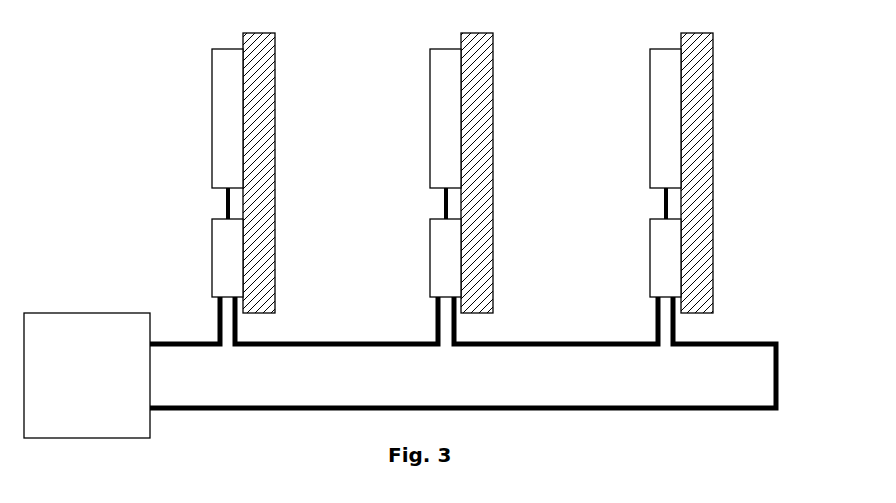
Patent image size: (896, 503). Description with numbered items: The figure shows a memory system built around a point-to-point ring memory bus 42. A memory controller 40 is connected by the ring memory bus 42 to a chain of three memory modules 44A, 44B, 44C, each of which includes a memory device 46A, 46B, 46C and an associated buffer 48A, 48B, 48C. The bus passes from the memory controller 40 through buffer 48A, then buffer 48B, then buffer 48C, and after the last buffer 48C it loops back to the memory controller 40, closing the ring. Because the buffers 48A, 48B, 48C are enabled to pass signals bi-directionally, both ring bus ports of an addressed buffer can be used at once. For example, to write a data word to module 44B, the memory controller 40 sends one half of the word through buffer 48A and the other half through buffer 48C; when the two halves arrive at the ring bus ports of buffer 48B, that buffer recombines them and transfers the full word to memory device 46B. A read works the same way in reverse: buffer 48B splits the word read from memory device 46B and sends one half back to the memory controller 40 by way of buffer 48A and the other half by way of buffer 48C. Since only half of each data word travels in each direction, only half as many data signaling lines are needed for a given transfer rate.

The memory controller 40 is at (87, 375).
The ring memory bus 42 is at (463, 352).
The memory module 44A is at (275, 80).
The memory module 44B is at (493, 80).
The memory module 44C is at (713, 80).
The memory device 46A is at (212, 118).
The memory device 46B is at (430, 118).
The memory device 46C is at (650, 118).
The buffer 48A is at (212, 250).
The buffer 48B is at (430, 250).
The buffer 48C is at (650, 250).